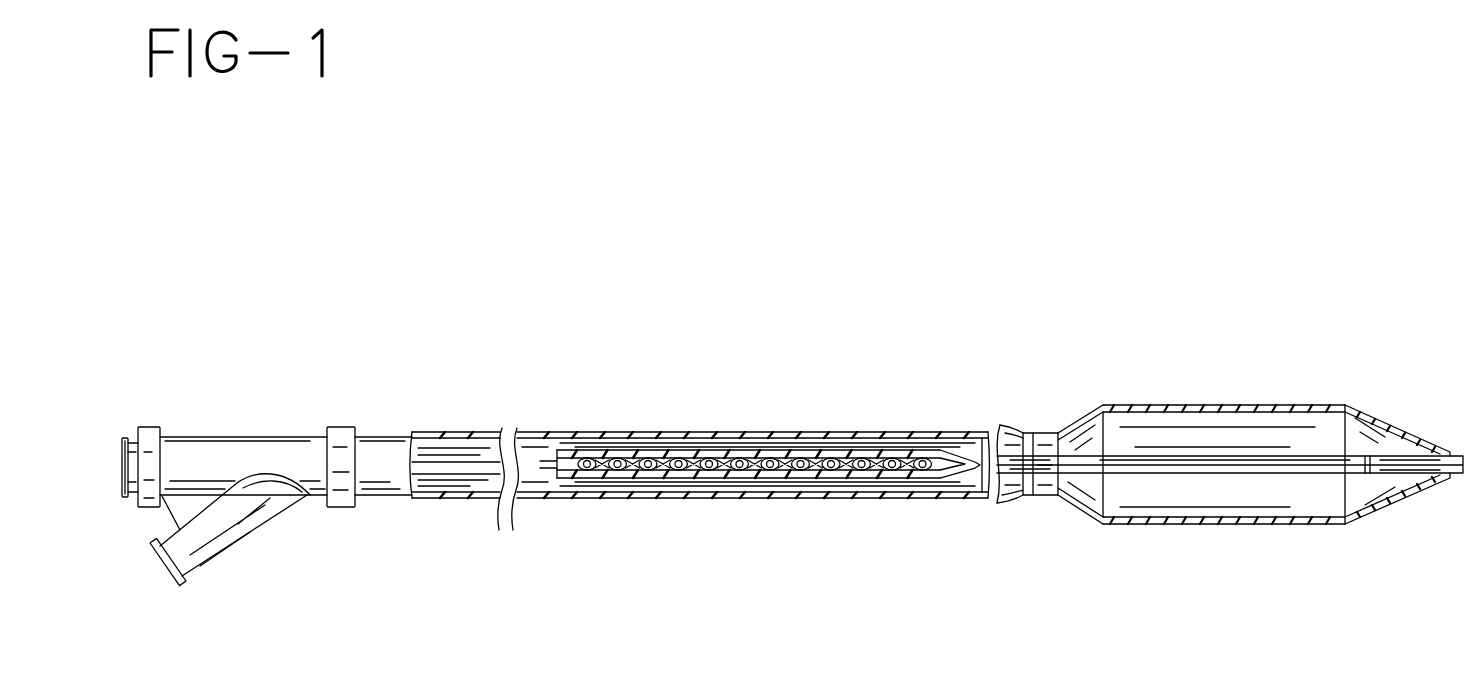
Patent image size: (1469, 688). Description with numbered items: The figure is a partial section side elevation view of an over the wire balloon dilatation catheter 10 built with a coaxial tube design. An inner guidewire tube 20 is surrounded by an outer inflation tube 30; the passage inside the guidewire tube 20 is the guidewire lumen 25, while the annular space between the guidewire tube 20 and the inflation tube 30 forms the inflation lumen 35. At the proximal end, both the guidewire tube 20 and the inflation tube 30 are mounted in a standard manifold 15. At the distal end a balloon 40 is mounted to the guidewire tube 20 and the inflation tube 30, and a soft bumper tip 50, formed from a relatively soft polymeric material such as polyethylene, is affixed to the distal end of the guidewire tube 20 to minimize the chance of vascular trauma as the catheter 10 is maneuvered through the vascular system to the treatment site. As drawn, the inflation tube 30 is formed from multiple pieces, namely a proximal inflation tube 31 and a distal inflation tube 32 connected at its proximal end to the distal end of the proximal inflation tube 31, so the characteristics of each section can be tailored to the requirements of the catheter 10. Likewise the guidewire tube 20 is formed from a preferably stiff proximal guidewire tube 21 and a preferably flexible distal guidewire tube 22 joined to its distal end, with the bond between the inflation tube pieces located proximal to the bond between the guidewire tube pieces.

The balloon dilatation catheter 10 is at (624, 310).
The manifold 15 is at (224, 437).
The guidewire tube 20 is at (443, 477).
The proximal guidewire tube 21 is at (540, 460).
The distal guidewire tube 22 is at (1140, 455).
The guidewire lumen 25 is at (502, 482).
The inflation tube 30 is at (718, 430).
The proximal inflation tube 31 is at (460, 437).
The distal inflation tube 32 is at (935, 430).
The inflation lumen 35 is at (618, 482).
The balloon 40 is at (1262, 405).
The bumper tip 50 is at (1387, 477).